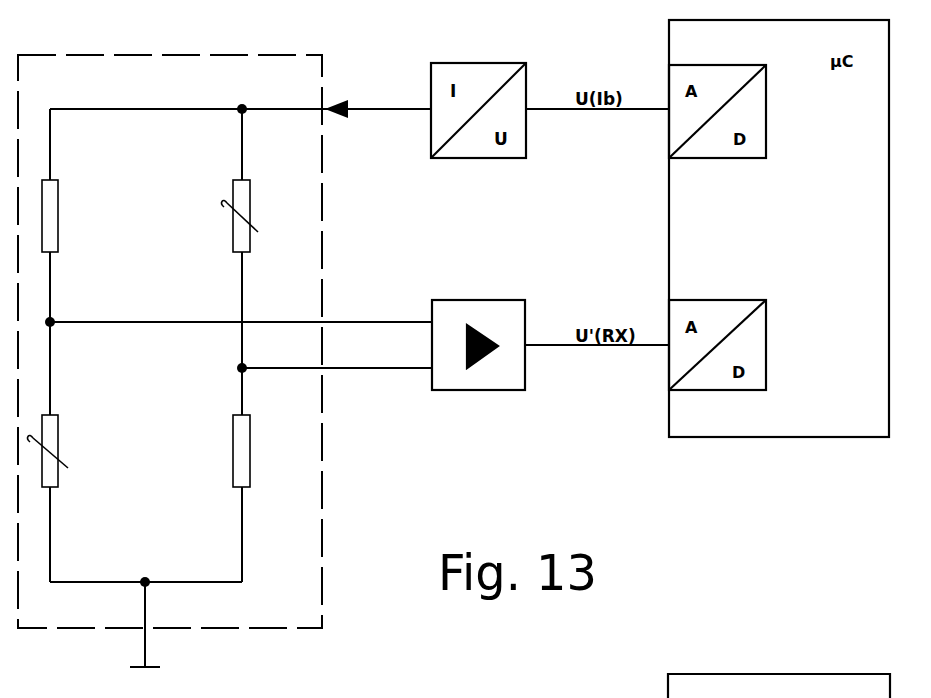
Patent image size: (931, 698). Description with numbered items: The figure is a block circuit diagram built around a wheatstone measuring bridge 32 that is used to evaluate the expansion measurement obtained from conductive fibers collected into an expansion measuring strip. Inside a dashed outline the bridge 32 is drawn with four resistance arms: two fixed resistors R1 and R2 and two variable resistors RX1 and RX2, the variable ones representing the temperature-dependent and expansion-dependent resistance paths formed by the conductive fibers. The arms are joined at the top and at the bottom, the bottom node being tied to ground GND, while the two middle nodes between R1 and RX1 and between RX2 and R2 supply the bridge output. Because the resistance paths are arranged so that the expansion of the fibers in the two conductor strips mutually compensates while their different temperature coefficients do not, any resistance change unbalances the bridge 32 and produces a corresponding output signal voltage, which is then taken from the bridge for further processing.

The wheatstone measuring bridge 32 is at (225, 376).
The fixed bridge resistor R1 is at (70, 216).
The fixed bridge resistor R2 is at (261, 451).
The variable sensor resistor RX1 is at (67, 451).
The variable sensor resistor RX2 is at (260, 216).
The ground connection GND is at (145, 637).